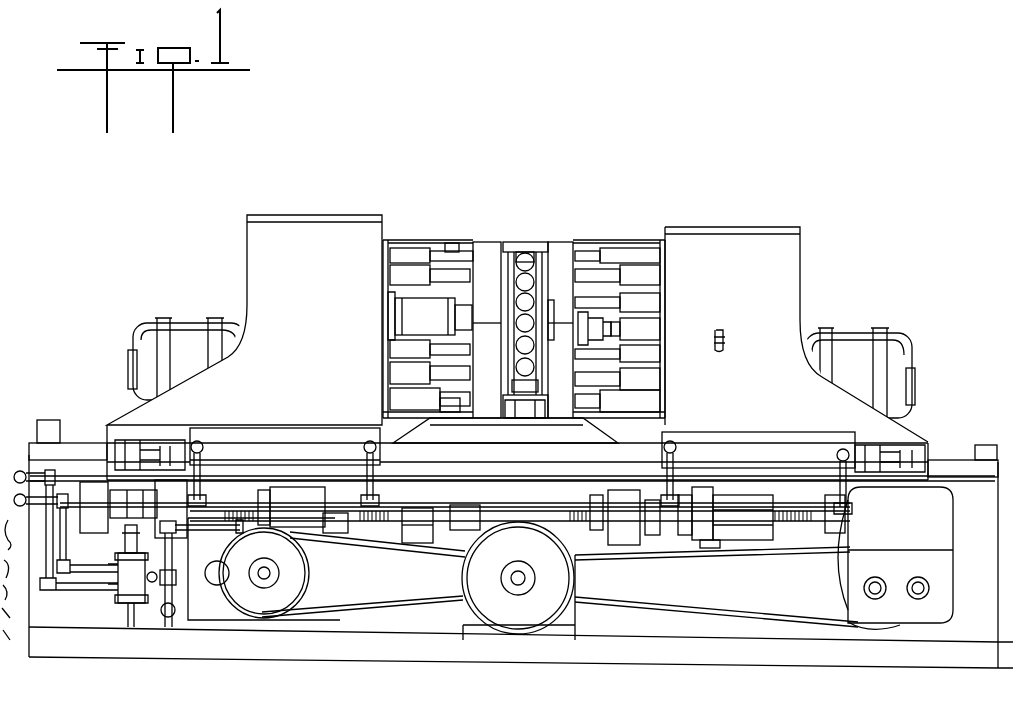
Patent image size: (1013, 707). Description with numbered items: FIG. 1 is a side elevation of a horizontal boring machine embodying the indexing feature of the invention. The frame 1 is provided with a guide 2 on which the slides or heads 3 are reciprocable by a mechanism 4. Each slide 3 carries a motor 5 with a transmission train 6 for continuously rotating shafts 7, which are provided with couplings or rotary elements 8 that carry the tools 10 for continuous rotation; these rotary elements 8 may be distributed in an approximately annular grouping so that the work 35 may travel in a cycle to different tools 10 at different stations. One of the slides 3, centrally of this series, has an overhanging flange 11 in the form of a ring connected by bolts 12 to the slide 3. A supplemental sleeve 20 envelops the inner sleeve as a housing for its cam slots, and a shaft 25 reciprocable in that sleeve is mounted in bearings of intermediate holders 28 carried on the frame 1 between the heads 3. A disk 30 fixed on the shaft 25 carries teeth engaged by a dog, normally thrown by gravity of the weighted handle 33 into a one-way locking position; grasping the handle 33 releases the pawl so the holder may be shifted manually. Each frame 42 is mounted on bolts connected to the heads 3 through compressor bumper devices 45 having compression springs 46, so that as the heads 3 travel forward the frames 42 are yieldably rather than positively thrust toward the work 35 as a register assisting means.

The frame 1 is at (662, 655).
The guide 2 is at (84, 443).
The slide or head 3 is at (262, 213).
The mechanism 4 is at (262, 440).
The motor 5 is at (158, 322).
The transmission train 6 is at (724, 331).
The shaft 7 is at (440, 252).
The coupling or rotary element 8 is at (452, 243).
The tool 10 is at (440, 402).
The overhanging flange 11 is at (388, 306).
The bolt 12 is at (392, 318).
The supplemental sleeve 20 is at (410, 325).
The shaft 25 is at (463, 322).
The intermediate holder 28 is at (552, 243).
The disk 30 is at (582, 337).
The handle 33 is at (546, 316).
The work 35 is at (522, 402).
The frame 42 is at (507, 402).
The compressor bumper device 45 is at (403, 240).
The compression spring 46 is at (488, 240).